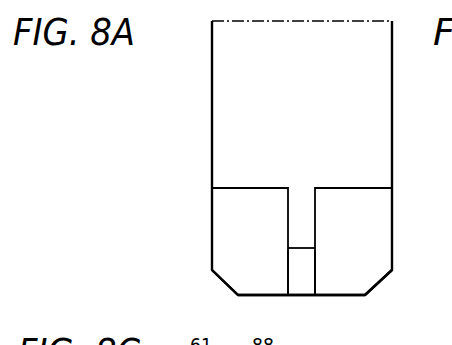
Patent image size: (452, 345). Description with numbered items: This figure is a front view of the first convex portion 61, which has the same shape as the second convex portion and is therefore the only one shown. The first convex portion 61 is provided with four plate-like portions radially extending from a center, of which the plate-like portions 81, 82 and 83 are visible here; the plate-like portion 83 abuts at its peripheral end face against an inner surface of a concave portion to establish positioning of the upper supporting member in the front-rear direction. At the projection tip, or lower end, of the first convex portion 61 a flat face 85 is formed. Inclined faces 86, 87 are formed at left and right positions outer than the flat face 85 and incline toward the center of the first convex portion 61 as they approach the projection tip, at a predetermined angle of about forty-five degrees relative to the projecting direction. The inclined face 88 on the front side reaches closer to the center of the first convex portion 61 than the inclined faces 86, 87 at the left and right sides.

The first convex portion 61 is at (197, 80).
The plate-like portion 81 is at (222, 237).
The plate-like portion 82 is at (380, 238).
The plate-like portion 83 is at (302, 201).
The flat face 85 is at (338, 297).
The inclined face 86 is at (230, 290).
The inclined face 87 is at (377, 287).
The inclined face 88 is at (302, 282).